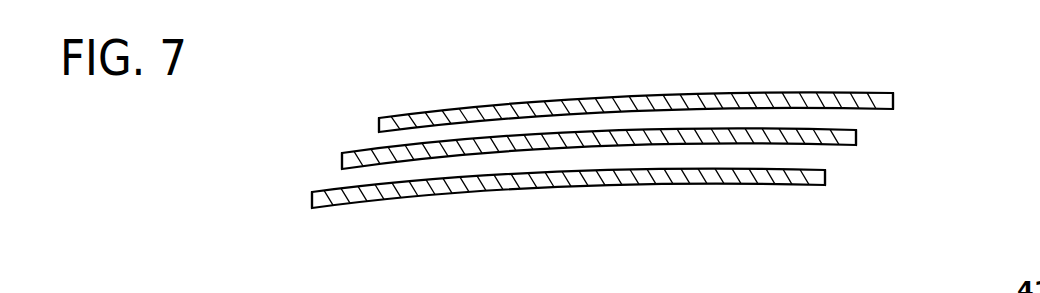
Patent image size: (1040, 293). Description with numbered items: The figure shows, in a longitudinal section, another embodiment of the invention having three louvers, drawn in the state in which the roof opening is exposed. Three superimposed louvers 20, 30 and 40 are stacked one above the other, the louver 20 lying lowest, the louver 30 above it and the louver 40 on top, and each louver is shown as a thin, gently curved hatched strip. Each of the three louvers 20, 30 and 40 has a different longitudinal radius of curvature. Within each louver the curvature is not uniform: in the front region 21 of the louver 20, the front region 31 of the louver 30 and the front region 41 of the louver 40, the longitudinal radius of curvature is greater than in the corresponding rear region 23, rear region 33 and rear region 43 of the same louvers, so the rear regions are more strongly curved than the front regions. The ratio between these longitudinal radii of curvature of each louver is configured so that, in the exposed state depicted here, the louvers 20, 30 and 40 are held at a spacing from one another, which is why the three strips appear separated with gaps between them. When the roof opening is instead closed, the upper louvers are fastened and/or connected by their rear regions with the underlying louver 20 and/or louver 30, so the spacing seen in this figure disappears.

The louver 20 is at (627, 177).
The front region of louver 21 is at (312, 199).
The rear region of louver 23 is at (826, 178).
The louver 30 is at (527, 143).
The front region of louver 31 is at (341, 160).
The rear region of louver 33 is at (857, 135).
The louver 40 is at (573, 100).
The front region of louver 41 is at (377, 127).
The rear region of louver 43 is at (893, 91).